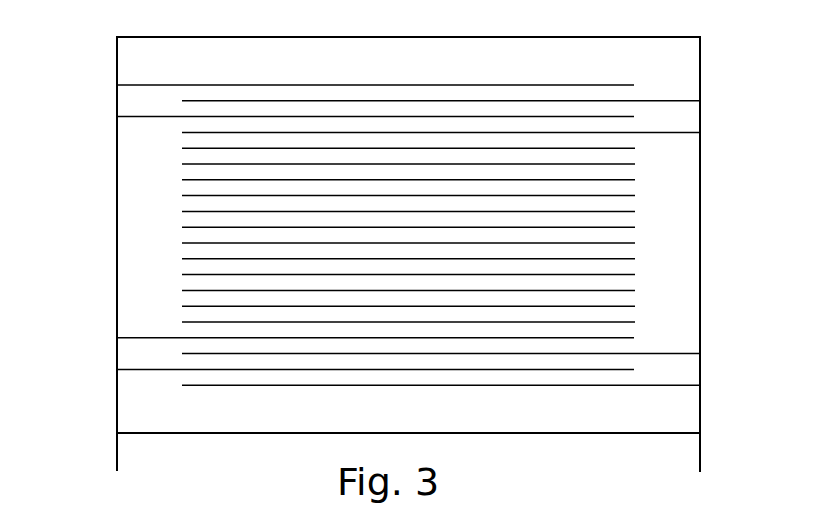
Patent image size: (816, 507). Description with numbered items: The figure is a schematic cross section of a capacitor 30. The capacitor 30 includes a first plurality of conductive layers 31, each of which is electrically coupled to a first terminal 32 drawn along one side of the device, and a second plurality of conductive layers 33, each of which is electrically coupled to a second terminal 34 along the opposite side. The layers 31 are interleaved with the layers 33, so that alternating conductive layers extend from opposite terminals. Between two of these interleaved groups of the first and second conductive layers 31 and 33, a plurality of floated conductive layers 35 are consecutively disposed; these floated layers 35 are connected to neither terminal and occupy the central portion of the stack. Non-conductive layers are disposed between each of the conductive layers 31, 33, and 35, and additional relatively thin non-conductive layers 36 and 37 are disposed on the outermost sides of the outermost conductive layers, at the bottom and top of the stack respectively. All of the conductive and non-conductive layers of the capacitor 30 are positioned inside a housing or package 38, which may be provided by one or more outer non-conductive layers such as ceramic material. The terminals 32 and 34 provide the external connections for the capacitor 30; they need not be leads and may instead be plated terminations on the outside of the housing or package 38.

The capacitor 30 is at (401, 240).
The first plurality of conductive layers 31 is at (214, 84).
The first terminal 32 is at (114, 453).
The second plurality of conductive layers 33 is at (580, 386).
The second terminal 34 is at (701, 451).
The floated conductive layers 35 is at (643, 145).
The non-conductive layer 36 is at (422, 416).
The non-conductive layer 37 is at (423, 68).
The housing or package 38 is at (262, 36).